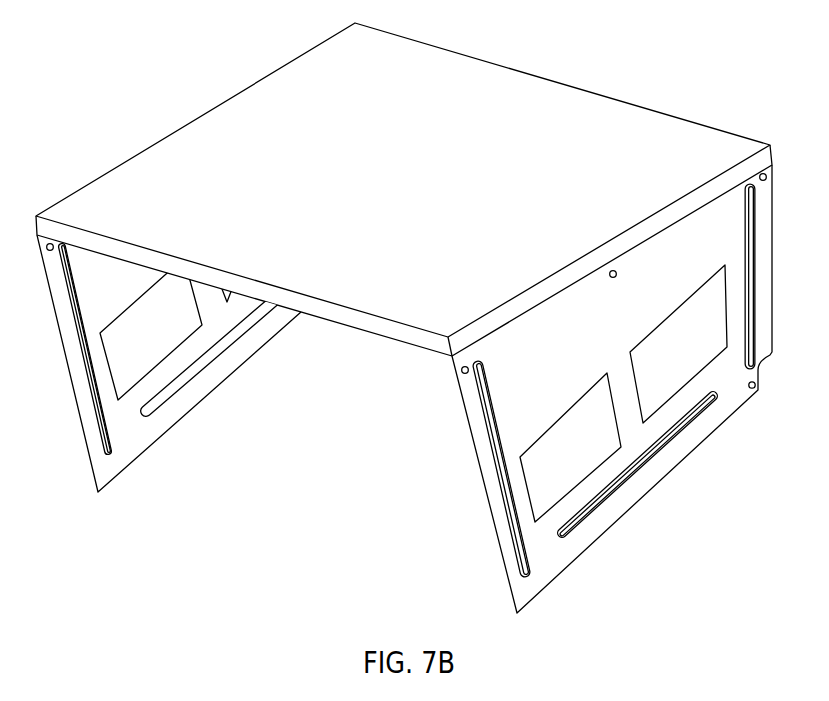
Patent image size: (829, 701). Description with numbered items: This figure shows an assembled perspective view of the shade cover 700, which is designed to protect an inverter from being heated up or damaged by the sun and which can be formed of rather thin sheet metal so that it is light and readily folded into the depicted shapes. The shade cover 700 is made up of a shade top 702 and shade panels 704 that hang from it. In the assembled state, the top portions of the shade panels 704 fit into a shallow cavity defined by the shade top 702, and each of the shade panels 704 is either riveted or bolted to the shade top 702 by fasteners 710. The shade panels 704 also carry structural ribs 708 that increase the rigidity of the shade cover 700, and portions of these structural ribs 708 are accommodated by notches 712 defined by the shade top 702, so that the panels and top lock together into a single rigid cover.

The shade cover 700 is at (116, 79).
The shade top 702 is at (436, 207).
The shade panels 704 is at (619, 341).
The structural ribs 708 is at (169, 340).
The fasteners 710 is at (466, 365).
The notches 712 is at (494, 378).